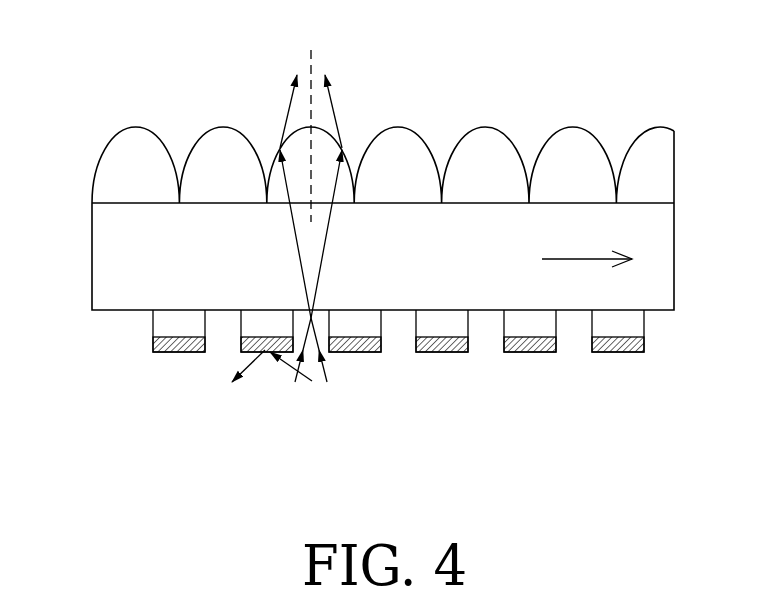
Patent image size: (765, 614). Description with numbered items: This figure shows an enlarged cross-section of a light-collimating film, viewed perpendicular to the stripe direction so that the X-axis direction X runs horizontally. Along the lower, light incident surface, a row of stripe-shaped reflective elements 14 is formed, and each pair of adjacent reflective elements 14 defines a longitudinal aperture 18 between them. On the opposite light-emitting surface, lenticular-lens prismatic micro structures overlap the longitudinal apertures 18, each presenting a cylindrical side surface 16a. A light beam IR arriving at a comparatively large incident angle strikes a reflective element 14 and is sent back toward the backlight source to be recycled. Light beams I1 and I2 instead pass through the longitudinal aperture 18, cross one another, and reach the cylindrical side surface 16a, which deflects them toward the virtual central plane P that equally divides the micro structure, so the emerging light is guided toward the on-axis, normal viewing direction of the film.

The reflective element 14 is at (177, 352).
The cylindrical side surface 16a is at (136, 126).
The longitudinal aperture 18 is at (488, 339).
The virtual central plane P is at (312, 118).
The X-axis direction X is at (603, 259).
The incident light beam I1 is at (319, 245).
The incident light beam I2 is at (306, 245).
The reflected light beam IR is at (236, 383).